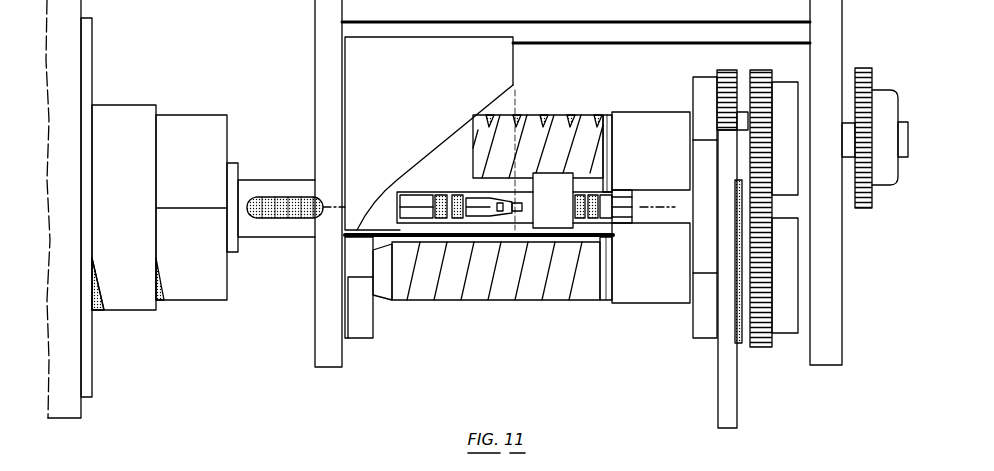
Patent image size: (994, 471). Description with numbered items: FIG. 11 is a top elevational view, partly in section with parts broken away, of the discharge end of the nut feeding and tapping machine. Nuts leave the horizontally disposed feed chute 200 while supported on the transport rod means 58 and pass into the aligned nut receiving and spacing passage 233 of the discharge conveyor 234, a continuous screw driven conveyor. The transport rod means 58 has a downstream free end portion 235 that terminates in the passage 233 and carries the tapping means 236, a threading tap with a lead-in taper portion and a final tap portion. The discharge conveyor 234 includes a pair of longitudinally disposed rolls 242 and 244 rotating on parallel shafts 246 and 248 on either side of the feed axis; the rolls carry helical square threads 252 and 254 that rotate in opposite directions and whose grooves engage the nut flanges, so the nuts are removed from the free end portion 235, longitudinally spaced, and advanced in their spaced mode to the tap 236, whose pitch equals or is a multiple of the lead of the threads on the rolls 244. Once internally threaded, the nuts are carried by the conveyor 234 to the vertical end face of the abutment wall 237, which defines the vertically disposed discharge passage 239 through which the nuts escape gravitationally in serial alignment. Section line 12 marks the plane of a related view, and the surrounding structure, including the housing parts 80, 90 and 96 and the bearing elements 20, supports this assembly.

The section line 12 is at (294, 195).
The bearings 20 is at (458, 195).
The transport rod means 58 is at (403, 188).
The motor housing 80 is at (186, 68).
The mounting panel 90 is at (106, 59).
The motor end housing 96 is at (216, 106).
The feed chute 200 is at (271, 251).
The nut receiving and spacing passage 233 is at (412, 198).
The discharge conveyor 234 is at (644, 100).
The downstream free end portion 235 is at (515, 205).
The tapping means 236 is at (500, 210).
The abutment wall 237 is at (625, 218).
The discharge passage 239 is at (612, 205).
The roll 242 is at (558, 322).
The roll 244 is at (530, 98).
The shaft 246 is at (607, 258).
The shaft 248 is at (608, 150).
The square threads 252 is at (483, 300).
The square threads 254 is at (540, 123).